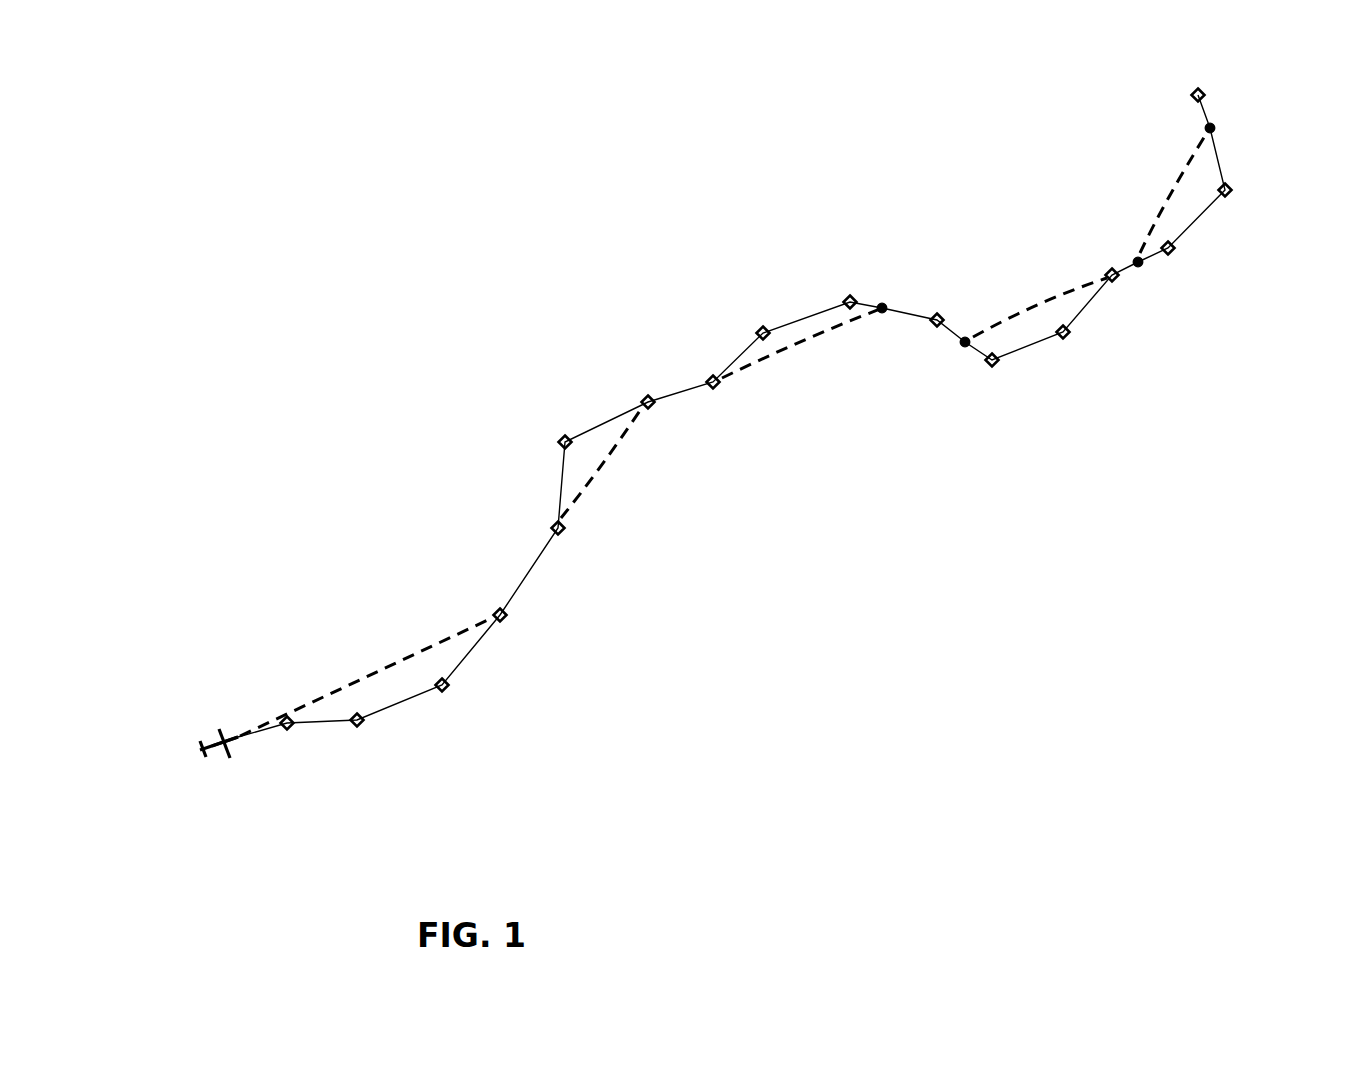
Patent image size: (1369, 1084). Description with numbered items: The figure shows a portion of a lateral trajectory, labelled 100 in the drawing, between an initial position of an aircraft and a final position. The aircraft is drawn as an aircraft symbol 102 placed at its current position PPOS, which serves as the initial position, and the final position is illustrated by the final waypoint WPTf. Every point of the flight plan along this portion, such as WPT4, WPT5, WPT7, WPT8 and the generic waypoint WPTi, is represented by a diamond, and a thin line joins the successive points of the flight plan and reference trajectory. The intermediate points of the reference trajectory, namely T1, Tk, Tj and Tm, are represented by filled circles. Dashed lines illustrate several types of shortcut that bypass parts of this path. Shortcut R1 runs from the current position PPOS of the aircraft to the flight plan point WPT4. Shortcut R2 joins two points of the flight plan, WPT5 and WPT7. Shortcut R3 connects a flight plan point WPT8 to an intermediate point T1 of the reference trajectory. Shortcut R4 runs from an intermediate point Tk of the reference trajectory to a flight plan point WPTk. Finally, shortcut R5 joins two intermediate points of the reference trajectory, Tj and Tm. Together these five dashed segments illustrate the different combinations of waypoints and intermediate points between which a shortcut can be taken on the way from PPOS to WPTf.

The flight plan display 100 is at (756, 736).
The aircraft symbol 102 is at (192, 740).
The current position of the aircraft PPOS is at (243, 750).
The shortcut R1 is at (415, 647).
The shortcut R2 is at (607, 480).
The shortcut R3 is at (795, 353).
The shortcut R4 is at (1053, 292).
The shortcut R5 is at (1163, 197).
The point of the flight plan WPT4 is at (507, 623).
The point of the flight plan WPT5 is at (545, 520).
The point of the flight plan WPT7 is at (637, 398).
The point of the flight plan WPT8 is at (722, 392).
The point of the flight plan WPTi is at (757, 325).
The point of the flight plan WPTk is at (1120, 287).
The final waypoint WPTf is at (1183, 87).
The intermediate point of the reference trajectory T1 is at (877, 300).
The intermediate point of the reference trajectory Tk is at (962, 352).
The intermediate point of the reference trajectory Tj is at (1147, 270).
The intermediate point of the reference trajectory Tm is at (1220, 133).